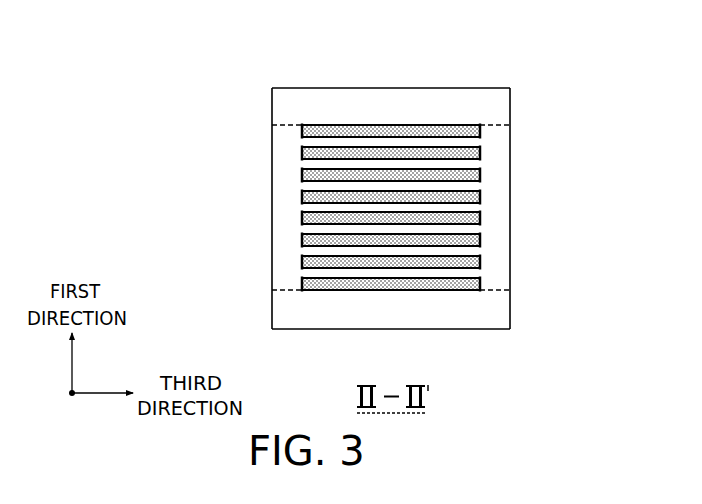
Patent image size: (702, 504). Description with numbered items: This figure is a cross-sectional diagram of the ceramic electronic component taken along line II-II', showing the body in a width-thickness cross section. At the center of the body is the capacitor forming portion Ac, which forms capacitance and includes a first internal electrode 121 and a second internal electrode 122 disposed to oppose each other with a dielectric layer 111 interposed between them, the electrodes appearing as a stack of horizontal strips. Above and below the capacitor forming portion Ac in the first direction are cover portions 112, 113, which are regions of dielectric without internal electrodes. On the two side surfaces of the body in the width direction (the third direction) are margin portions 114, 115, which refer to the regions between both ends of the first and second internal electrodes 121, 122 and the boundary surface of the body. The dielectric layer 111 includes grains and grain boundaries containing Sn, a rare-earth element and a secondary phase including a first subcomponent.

The dielectric layer 111 is at (480, 137).
The cover portion 112 is at (398, 105).
The cover portion 113 is at (505, 308).
The margin portion 114 is at (287, 245).
The margin portion 115 is at (505, 232).
The first internal electrode 121 is at (482, 125).
The second internal electrode 122 is at (481, 148).
The capacitor forming portion Ac is at (301, 212).